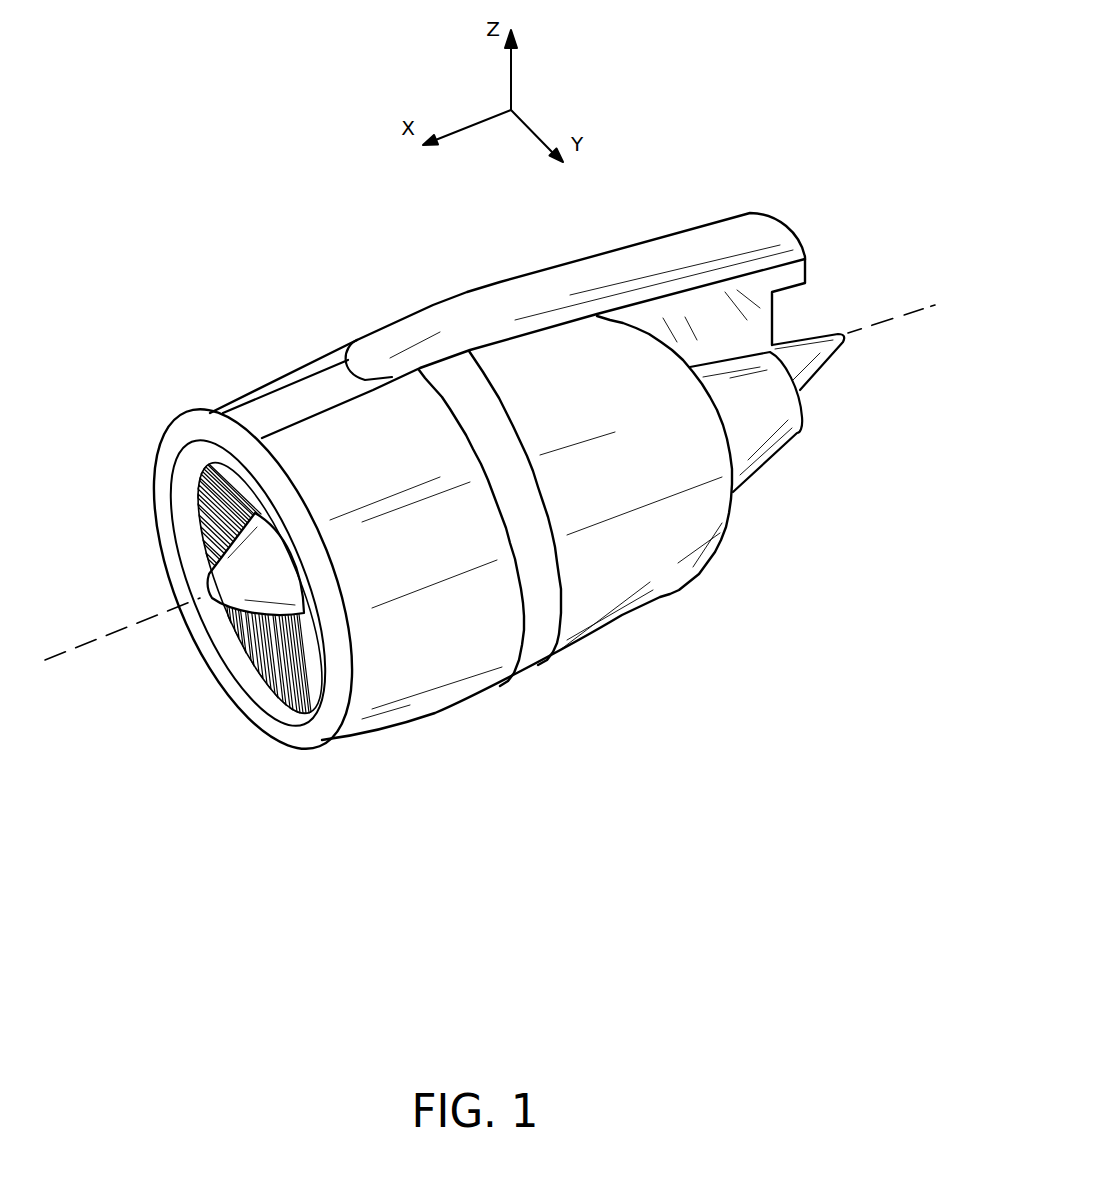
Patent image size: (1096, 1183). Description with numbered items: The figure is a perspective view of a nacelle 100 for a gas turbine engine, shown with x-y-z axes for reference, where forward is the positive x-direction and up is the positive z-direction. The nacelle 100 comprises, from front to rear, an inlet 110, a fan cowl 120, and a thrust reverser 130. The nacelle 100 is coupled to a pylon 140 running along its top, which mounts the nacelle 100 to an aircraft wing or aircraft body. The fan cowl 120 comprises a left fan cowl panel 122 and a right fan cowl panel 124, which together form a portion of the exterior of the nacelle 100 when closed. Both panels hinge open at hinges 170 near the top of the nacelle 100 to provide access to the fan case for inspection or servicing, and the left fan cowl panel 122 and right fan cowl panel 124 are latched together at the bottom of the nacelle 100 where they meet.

The nacelle 100 is at (185, 222).
The inlet 110 is at (295, 745).
The fan cowl 120 is at (432, 713).
The left fan cowl panel 122 is at (463, 633).
The right fan cowl panel 124 is at (270, 373).
The thrust reverser 130 is at (623, 627).
The pylon 140 is at (630, 243).
The hinges 170 is at (318, 368).